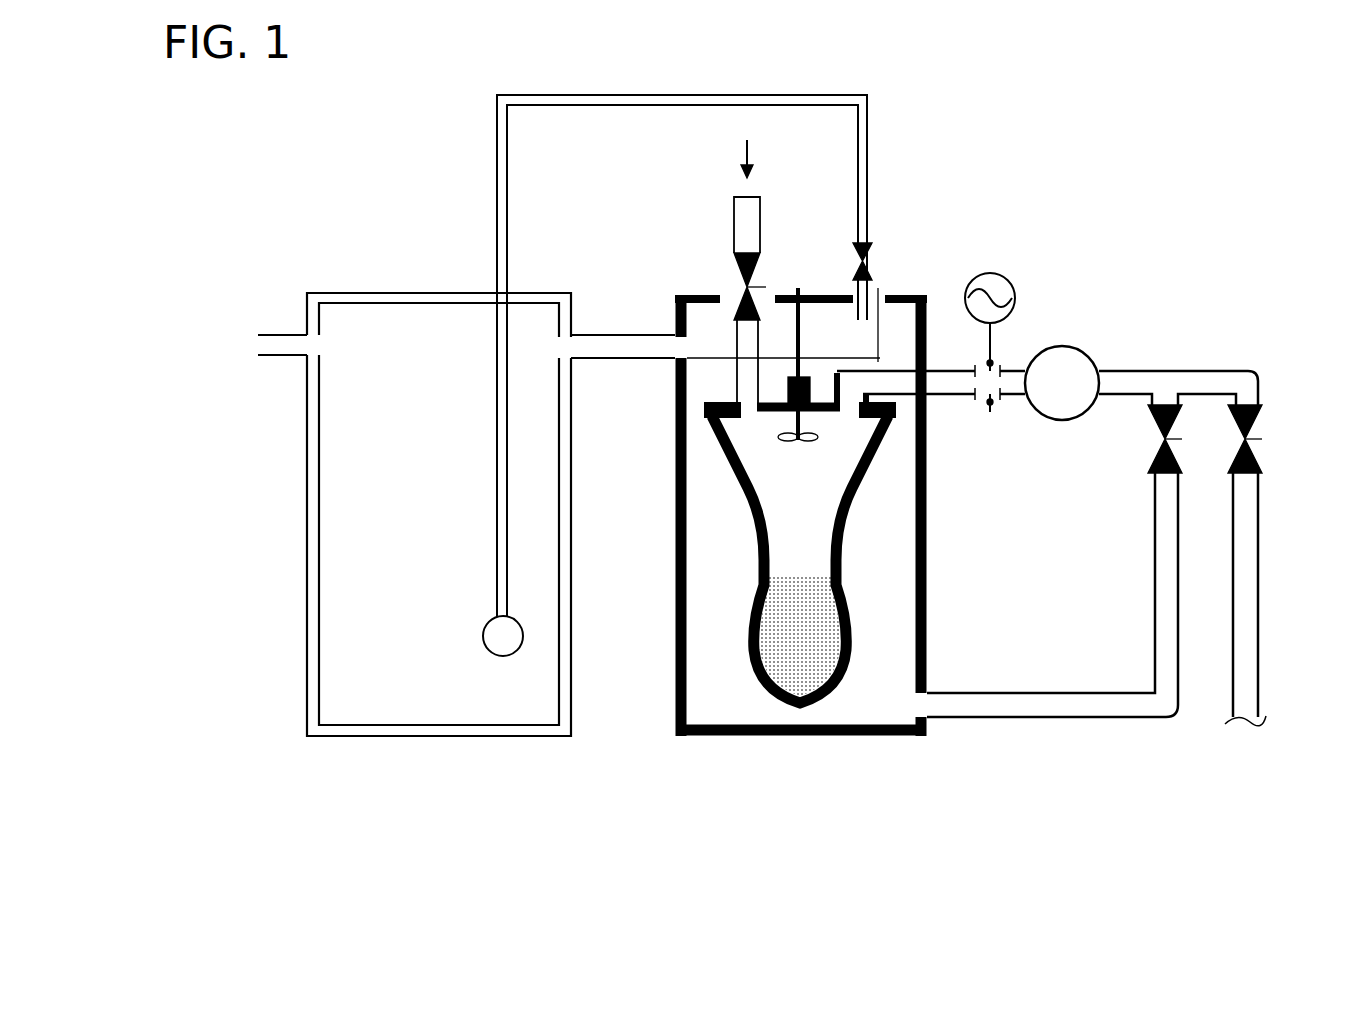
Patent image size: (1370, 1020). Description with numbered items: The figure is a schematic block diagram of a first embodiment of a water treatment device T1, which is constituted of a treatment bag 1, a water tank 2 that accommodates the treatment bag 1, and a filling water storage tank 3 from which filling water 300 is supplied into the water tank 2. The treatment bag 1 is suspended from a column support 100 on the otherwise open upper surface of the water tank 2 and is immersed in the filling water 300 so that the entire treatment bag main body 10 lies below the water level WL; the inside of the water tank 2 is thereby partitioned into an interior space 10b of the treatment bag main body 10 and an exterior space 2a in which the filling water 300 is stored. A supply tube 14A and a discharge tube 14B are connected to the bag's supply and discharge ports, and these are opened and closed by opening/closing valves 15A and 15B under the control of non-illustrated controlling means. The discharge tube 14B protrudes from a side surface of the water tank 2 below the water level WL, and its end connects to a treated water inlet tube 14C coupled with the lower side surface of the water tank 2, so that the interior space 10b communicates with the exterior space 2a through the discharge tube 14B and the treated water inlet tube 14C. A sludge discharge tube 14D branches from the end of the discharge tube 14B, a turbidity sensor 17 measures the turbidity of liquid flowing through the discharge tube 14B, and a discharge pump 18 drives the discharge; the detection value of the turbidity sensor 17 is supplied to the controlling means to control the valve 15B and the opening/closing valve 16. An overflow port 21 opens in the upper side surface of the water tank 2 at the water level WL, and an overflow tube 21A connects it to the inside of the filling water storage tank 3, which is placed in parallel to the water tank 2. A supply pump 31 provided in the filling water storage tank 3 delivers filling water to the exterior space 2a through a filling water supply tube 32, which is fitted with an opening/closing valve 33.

The treatment bag 1 is at (875, 568).
The water tank 2 is at (927, 503).
The exterior space 2a is at (900, 630).
The filling water storage tank 3 is at (307, 495).
The treatment bag main body 10 is at (745, 492).
The interior space 10b is at (778, 545).
The supply tube 14A is at (734, 220).
The discharge tube 14B is at (1130, 370).
The treated water inlet tube 14C is at (1155, 590).
The sludge discharge tube 14D is at (1260, 590).
The opening/closing valve 15A is at (762, 275).
The opening/closing valve 15B is at (1148, 450).
The opening/closing valve 16 is at (1262, 450).
The turbidity sensor 17 is at (1000, 273).
The discharge pump 18 is at (1072, 348).
The overflow port 21 is at (668, 335).
The overflow tube 21A is at (615, 360).
The supply pump 31 is at (523, 636).
The filling water supply tube 32 is at (495, 190).
The opening/closing valve 33 is at (872, 258).
The column support 100 is at (885, 295).
The filling water 300 is at (336, 587).
The water treatment device T1 is at (986, 123).
The water level WL is at (897, 357).